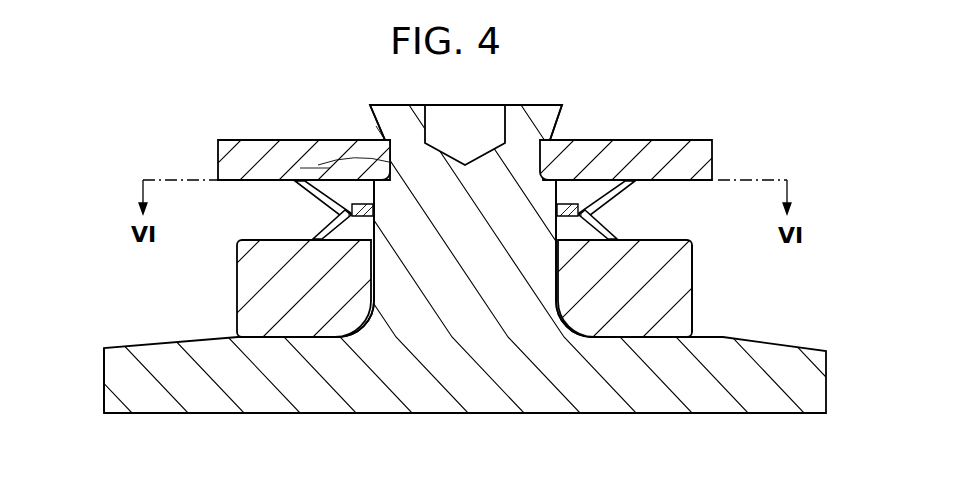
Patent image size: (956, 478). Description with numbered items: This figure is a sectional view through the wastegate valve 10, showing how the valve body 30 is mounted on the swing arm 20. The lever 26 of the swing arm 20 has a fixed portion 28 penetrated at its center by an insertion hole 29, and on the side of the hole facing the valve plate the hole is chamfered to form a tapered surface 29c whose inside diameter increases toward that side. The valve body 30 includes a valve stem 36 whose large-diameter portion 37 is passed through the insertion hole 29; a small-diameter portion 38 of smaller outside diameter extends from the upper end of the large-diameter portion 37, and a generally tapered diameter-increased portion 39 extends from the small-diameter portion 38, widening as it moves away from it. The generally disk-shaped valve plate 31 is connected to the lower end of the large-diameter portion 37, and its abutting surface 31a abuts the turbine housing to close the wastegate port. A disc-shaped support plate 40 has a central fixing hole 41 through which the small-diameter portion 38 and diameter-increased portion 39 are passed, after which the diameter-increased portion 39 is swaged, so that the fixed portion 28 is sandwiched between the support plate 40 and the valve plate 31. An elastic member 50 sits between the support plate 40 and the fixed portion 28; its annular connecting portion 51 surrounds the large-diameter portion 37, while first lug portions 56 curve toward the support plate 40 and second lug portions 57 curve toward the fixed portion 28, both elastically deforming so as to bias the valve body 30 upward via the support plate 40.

The wastegate valve 10 is at (755, 138).
The swing arm 20 is at (481, 288).
The lever 26 is at (692, 246).
The fixed portion 28 is at (692, 290).
The insertion hole 29 is at (556, 260).
The tapered surface 29c is at (575, 318).
The valve body 30 is at (146, 344).
The valve plate 31 is at (104, 367).
The abutting surface 31a is at (208, 413).
The valve stem 36 is at (347, 98).
The large-diameter portion 37 is at (300, 168).
The small-diameter portion 38 is at (360, 163).
The diameter-increased portion 39 is at (376, 126).
The support plate 40 is at (673, 140).
The fixing hole 41 is at (548, 136).
The elastic member 50 is at (505, 210).
The connecting portion 51 is at (373, 207).
The first lug portions 56 is at (296, 186).
The second lug portions 57 is at (313, 235).